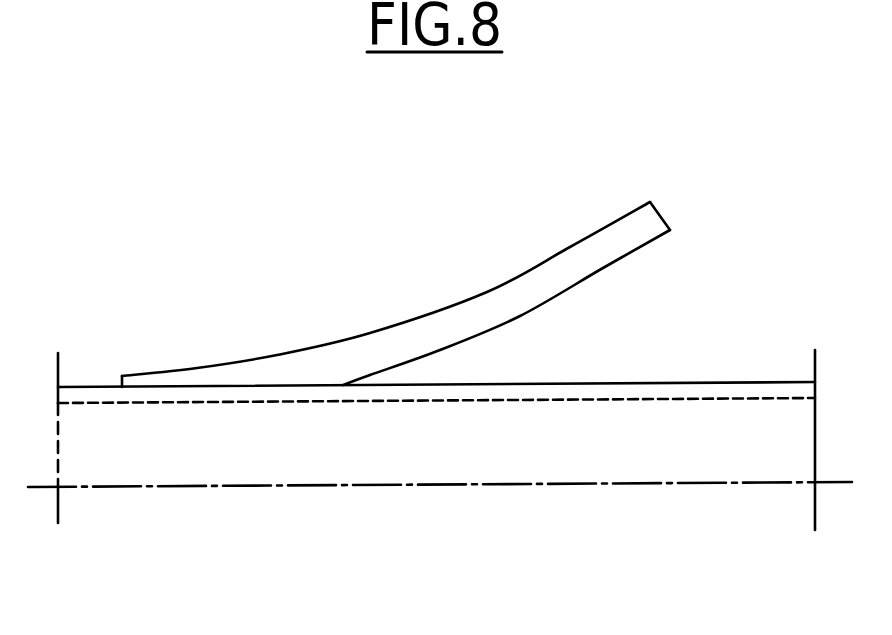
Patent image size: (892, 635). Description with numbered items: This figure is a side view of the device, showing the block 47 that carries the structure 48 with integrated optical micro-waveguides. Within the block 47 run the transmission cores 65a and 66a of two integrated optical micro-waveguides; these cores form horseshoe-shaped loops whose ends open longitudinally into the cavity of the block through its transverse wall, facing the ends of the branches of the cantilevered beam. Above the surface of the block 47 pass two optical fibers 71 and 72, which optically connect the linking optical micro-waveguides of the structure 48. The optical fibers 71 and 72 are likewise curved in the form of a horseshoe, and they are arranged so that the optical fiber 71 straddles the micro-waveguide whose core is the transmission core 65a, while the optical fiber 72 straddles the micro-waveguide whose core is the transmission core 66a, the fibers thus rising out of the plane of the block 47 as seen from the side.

The block 47 is at (440, 455).
The structure 48 is at (387, 284).
The optical fiber 71 is at (386, 278).
The optical fiber 72 is at (488, 303).
The transmission core 65a is at (436, 508).
The transmission core 66a is at (436, 508).